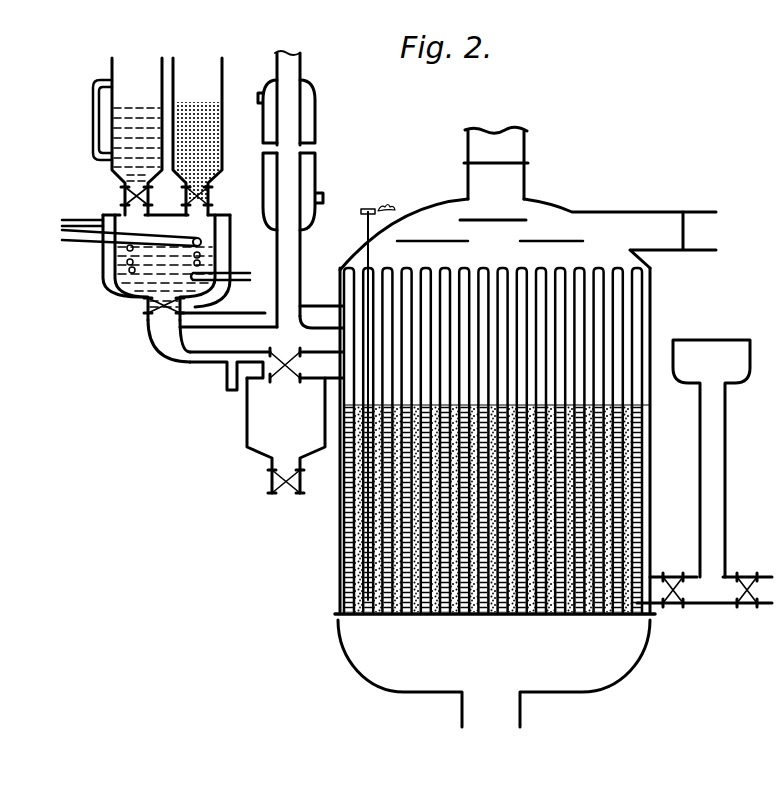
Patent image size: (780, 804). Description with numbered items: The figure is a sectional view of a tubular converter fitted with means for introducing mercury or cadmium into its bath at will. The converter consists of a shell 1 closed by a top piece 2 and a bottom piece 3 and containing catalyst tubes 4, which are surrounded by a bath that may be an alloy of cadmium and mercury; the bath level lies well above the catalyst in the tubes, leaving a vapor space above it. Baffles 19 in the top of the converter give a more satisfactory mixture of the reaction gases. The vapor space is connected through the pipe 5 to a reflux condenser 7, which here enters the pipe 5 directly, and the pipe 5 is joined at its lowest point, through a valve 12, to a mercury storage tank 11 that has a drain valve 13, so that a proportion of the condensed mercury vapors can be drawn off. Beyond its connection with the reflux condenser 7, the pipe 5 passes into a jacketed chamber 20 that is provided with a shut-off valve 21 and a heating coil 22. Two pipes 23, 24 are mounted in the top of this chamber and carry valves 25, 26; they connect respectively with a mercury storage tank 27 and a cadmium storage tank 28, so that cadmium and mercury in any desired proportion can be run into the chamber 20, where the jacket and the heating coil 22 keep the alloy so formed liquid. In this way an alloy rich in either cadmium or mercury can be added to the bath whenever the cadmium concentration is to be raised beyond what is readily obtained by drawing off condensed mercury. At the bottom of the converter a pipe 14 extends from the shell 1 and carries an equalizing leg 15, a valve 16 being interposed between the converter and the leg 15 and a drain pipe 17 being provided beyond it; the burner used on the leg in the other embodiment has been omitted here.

The shell 1 is at (650, 297).
The top piece 2 is at (432, 207).
The bottom piece 3 is at (583, 692).
The catalyst tubes 4 is at (330, 577).
The pipe 5 is at (312, 326).
The reflux condenser 7 is at (290, 175).
The mercury storage tank 11 is at (250, 422).
The valve 12 is at (300, 365).
The drain valve 13 is at (286, 493).
The pipe 14 is at (700, 603).
The equalizing leg 15 is at (712, 432).
The valve 16 is at (685, 576).
The drain pipe 17 is at (740, 578).
The baffles 19 is at (520, 220).
The jacketed chamber 20 is at (116, 290).
The shut-off valve 21 is at (150, 312).
The heating coil 22 is at (122, 252).
The pipe 23 is at (120, 206).
The pipe 24 is at (212, 207).
The valve 25 is at (120, 193).
The valve 26 is at (210, 196).
The mercury storage tank 27 is at (128, 120).
The cadmium storage tank 28 is at (220, 108).